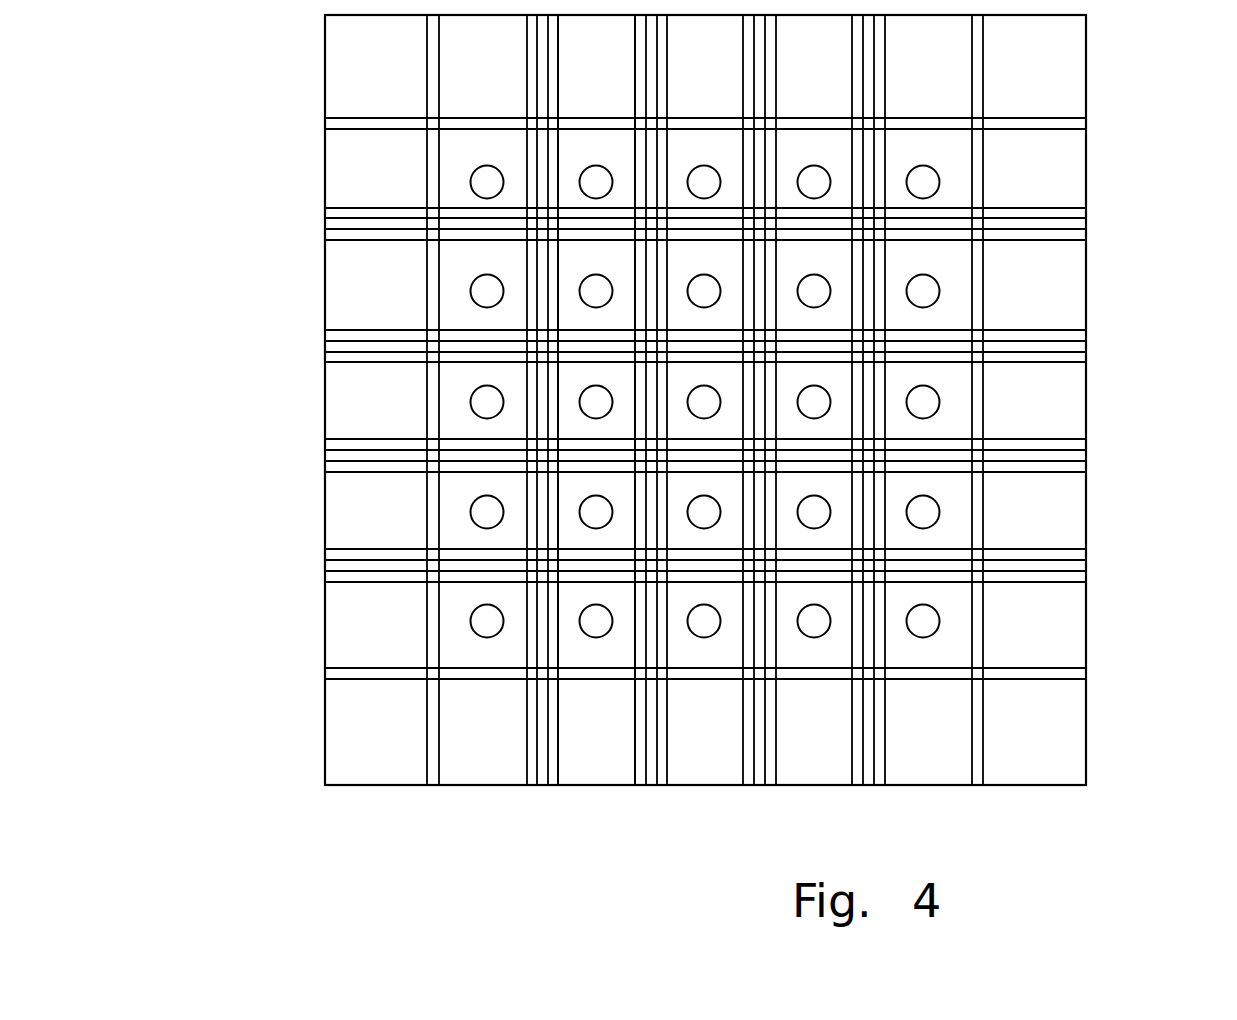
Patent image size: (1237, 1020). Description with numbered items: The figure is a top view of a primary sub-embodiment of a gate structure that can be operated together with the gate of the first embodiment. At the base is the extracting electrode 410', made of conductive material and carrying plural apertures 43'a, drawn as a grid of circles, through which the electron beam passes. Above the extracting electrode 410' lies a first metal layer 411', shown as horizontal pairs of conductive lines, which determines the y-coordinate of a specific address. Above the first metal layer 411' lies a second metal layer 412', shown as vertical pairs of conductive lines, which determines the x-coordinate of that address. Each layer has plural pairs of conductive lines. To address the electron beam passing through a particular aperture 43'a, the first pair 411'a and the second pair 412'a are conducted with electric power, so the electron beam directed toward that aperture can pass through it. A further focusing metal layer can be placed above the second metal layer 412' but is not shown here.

The extracting electrode 410' is at (778, 400).
The first metal layer 411' is at (595, 398).
The first pair 411'a is at (664, 400).
The second metal layer 412' is at (705, 472).
The second pair 412'a is at (596, 428).
The apertures 43'a is at (579, 402).